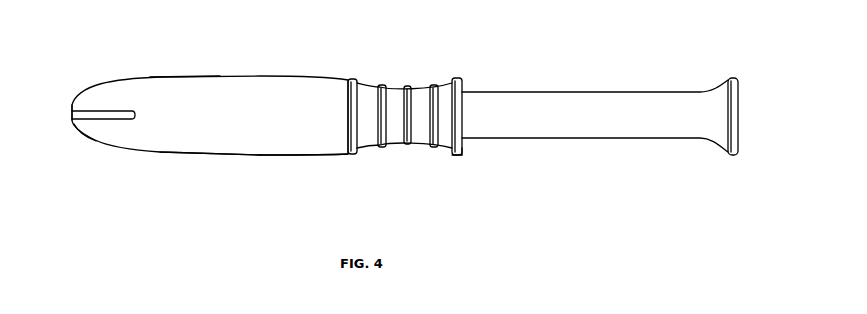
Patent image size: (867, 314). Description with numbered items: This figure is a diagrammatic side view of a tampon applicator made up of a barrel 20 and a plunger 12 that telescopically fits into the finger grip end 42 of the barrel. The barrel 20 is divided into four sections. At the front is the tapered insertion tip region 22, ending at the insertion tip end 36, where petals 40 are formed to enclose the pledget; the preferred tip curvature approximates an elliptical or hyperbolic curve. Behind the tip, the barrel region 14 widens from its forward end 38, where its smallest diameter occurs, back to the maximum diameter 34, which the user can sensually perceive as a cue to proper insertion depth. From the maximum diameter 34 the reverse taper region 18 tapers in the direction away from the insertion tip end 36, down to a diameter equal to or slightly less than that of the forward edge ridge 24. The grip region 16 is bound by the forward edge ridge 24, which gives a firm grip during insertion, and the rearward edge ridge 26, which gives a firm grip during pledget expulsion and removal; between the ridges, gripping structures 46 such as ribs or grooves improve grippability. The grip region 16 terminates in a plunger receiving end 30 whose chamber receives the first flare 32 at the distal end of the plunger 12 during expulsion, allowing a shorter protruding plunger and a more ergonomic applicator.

The plunger 12 is at (568, 92).
The barrel region 14 is at (203, 98).
The grip region 16 is at (408, 84).
The reverse taper region 18 is at (299, 166).
The barrel 20 is at (212, 164).
The insertion tip region 22 is at (84, 144).
The forward edge ridge 24 is at (362, 82).
The rearward edge ridge 26 is at (458, 156).
The plunger receiving end 30 is at (468, 81).
The first flare 32 is at (728, 78).
The maximum diameter 34 is at (314, 77).
The insertion tip end 36 is at (69, 92).
The forward end of barrel region 38 is at (182, 78).
The petals 40 is at (100, 98).
The finger grip end 42 is at (468, 146).
The gripping structures 46 is at (383, 85).